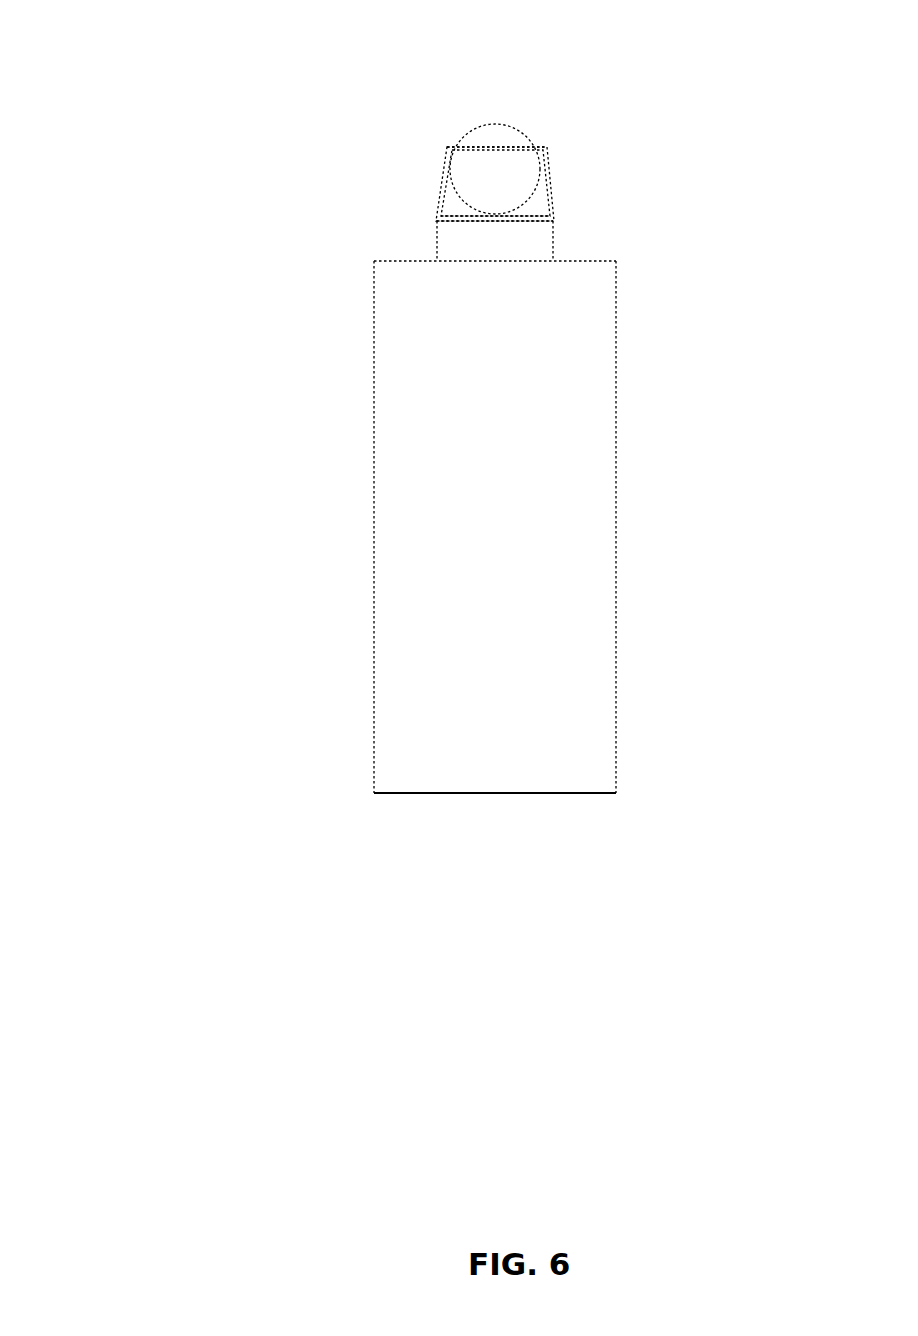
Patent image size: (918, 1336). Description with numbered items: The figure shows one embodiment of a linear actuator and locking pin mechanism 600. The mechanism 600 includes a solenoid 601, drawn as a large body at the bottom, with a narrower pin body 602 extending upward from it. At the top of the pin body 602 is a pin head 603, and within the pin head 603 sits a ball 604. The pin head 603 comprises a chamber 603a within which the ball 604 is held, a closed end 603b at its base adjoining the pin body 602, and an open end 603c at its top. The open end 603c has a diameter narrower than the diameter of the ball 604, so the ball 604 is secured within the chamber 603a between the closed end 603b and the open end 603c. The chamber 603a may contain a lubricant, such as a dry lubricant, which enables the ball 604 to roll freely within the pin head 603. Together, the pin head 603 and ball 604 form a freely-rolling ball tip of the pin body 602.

The mechanism 600 is at (129, 42).
The solenoid 601 is at (440, 587).
The pin body 602 is at (463, 242).
The pin head 603 is at (550, 194).
The chamber 603a is at (535, 210).
The closed end 603b is at (468, 218).
The open end 603c is at (456, 148).
The ball 604 is at (500, 133).